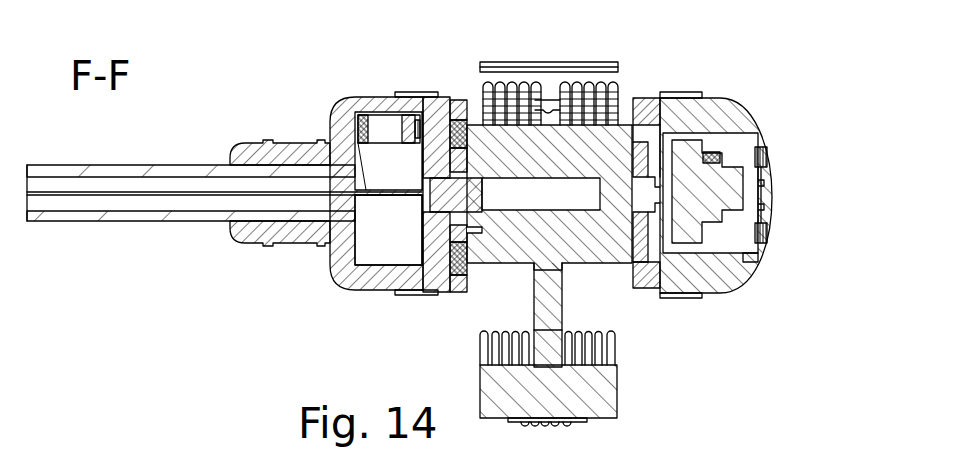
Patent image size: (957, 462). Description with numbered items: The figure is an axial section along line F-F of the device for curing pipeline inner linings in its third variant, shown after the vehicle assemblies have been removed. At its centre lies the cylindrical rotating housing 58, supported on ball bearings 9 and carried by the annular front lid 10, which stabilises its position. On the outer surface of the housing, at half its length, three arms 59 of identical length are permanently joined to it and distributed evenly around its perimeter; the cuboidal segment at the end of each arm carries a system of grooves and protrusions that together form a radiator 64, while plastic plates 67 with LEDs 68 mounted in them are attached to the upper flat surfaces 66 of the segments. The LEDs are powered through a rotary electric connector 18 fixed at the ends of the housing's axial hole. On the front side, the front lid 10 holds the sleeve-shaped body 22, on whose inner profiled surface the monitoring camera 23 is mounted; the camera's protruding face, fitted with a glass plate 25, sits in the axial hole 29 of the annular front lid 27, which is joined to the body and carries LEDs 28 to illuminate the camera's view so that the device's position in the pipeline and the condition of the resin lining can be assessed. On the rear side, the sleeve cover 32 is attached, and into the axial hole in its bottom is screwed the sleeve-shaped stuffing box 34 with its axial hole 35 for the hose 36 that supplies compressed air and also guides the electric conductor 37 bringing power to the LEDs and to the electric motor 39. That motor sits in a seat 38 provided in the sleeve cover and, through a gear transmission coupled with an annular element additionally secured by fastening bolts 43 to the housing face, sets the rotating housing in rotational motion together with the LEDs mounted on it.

The ball bearings 9 is at (673, 293).
The front lid 10 is at (647, 110).
The rotary electric connector 18 is at (467, 193).
The sleeve-shaped body 22 is at (730, 267).
The monitoring camera 23 is at (708, 145).
The glass plate 25 is at (812, 235).
The annular front lid 27 is at (812, 288).
The LEDs 28 is at (763, 150).
The axial hole 29 is at (812, 180).
The sleeve cover 32 is at (337, 108).
The stuffing box 34 is at (250, 158).
The axial hole 35 is at (85, 207).
The hose 36 is at (90, 173).
The electric conductor 37 is at (150, 197).
The seat 38 is at (375, 237).
The electric motor 39 is at (383, 132).
The fastening bolts 43 is at (473, 233).
The cylindrical rotating housing 58 is at (618, 93).
The arms 59 is at (553, 273).
The radiator 64 is at (493, 347).
The upper flat surfaces 66 is at (610, 418).
The plastic plates 67 is at (628, 450).
The LEDs 68 is at (523, 423).